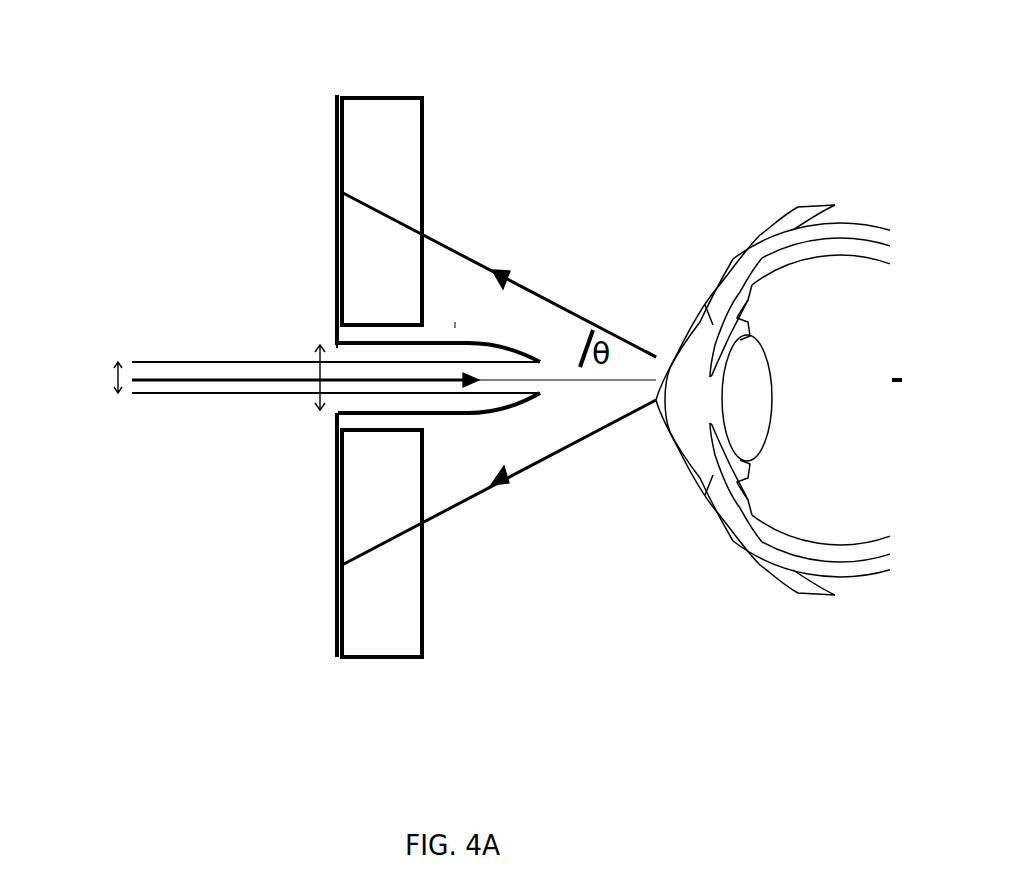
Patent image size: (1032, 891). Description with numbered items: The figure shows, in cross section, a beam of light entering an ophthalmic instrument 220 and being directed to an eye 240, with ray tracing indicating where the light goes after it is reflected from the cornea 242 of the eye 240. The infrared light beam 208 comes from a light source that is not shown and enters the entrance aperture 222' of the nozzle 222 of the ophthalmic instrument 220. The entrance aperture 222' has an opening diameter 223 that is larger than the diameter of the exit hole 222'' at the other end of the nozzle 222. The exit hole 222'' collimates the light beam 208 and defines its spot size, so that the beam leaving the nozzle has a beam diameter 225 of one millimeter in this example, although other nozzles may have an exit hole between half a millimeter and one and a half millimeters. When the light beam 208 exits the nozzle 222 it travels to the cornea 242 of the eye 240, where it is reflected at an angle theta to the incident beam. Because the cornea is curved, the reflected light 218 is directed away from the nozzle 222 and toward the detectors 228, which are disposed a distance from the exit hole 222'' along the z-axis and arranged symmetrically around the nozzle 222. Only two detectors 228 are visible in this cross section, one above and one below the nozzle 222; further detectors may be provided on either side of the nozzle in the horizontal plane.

The infrared light beam 208 is at (266, 400).
The reflected light 218 is at (556, 290).
The ophthalmic instrument 220 is at (456, 310).
The nozzle 222 is at (439, 553).
The entrance aperture 222' is at (193, 208).
The exit hole 222'' is at (690, 189).
The opening diameter 223 is at (317, 373).
The beam diameter 225 is at (292, 380).
The detectors 228 is at (390, 175).
The eye 240 is at (817, 503).
The cornea 242 is at (658, 398).